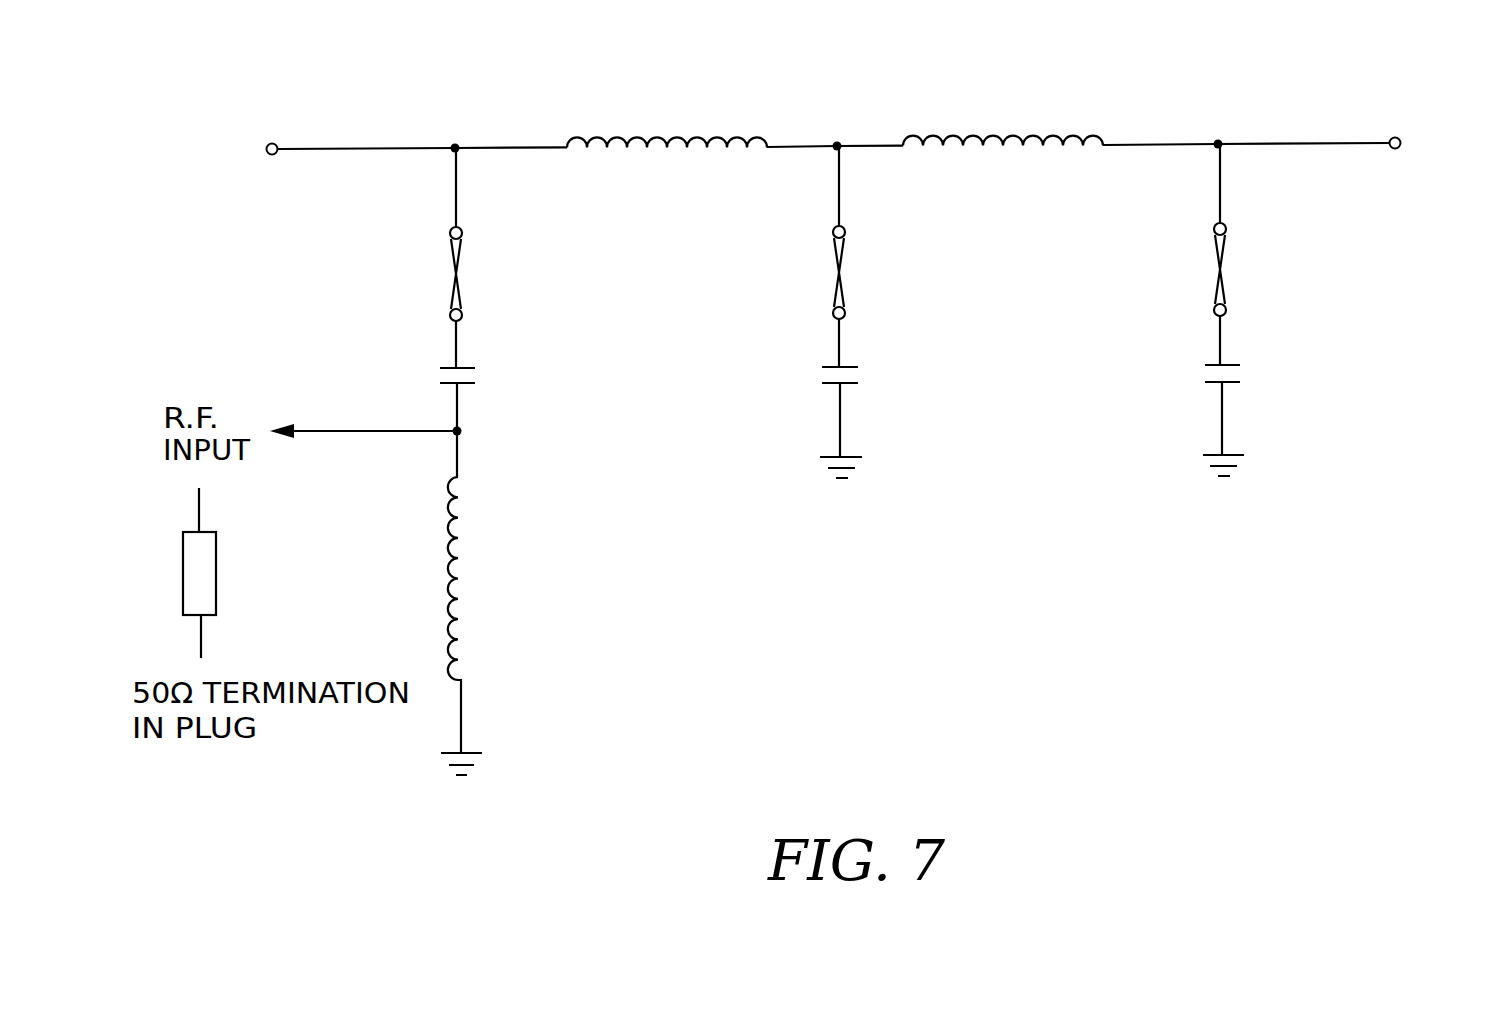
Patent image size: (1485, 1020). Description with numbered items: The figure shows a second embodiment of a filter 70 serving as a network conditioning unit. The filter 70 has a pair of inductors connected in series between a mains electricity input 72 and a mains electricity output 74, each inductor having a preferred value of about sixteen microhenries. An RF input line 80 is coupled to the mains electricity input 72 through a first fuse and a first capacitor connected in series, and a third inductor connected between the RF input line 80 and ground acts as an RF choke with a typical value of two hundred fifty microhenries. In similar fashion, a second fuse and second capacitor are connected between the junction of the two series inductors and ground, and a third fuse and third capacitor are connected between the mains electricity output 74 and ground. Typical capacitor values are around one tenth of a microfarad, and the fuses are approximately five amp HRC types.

The filter 70 is at (655, 60).
The mains electricity input 72 is at (262, 149).
The mains electricity output 74 is at (1402, 143).
The RF input line 80 is at (328, 430).